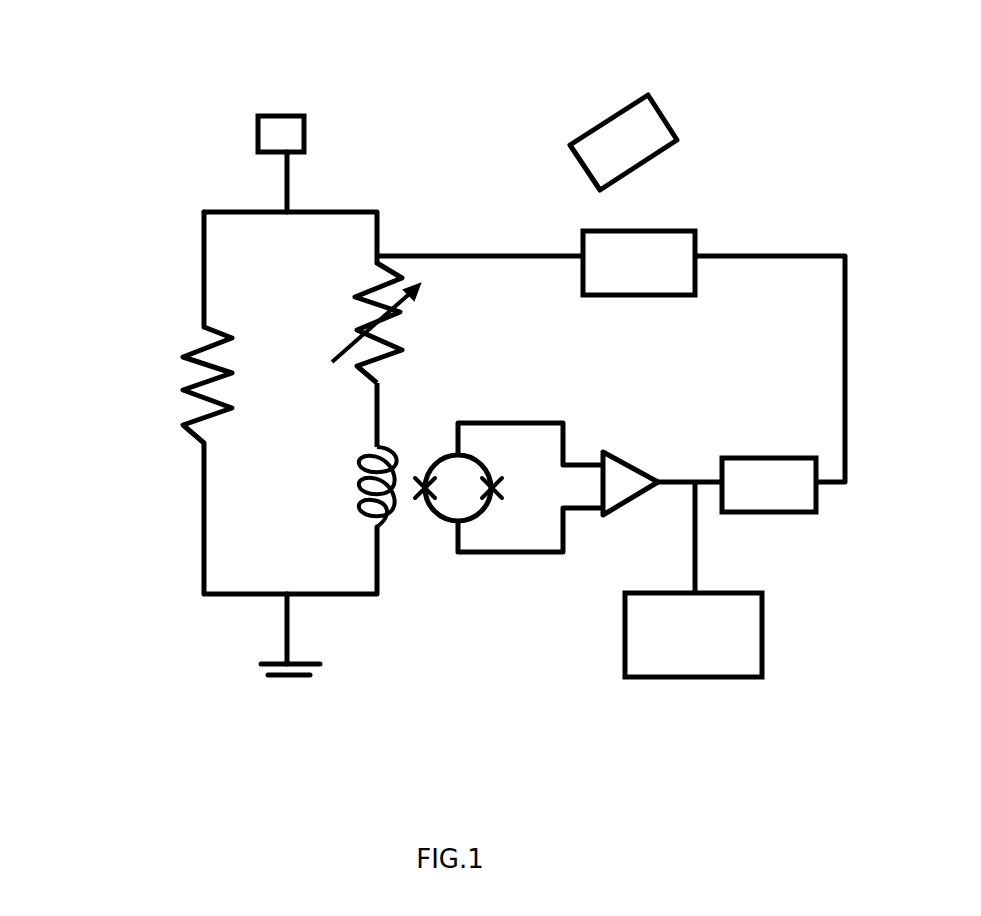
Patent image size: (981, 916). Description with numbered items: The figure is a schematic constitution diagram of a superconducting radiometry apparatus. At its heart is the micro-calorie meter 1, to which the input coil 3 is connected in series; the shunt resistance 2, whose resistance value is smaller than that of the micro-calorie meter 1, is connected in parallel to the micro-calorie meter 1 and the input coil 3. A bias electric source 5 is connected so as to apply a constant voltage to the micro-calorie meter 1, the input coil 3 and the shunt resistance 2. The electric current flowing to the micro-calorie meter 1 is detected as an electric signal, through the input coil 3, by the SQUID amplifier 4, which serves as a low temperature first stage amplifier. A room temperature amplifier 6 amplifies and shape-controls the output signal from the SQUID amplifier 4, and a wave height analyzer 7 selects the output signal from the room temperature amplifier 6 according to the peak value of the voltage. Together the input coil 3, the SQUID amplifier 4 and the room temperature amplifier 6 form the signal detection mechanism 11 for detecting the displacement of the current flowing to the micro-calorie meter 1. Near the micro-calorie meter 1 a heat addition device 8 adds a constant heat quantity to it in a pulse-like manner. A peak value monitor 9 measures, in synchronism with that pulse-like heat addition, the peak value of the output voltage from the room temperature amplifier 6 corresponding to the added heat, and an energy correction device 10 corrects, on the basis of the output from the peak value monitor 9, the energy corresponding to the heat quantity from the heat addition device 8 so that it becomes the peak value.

The micro-calorie meter 1 is at (390, 257).
The shunt resistance 2 is at (193, 385).
The input coil 3 is at (383, 517).
The SQUID amplifier 4 is at (468, 450).
The bias electric source 5 is at (293, 115).
The room temperature amplifier 6 is at (617, 465).
The wave height analyzer 7 is at (662, 653).
The heat addition device 8 is at (645, 123).
The peak value monitor 9 is at (762, 497).
The energy correction device 10 is at (652, 250).
The signal detection mechanism 11 is at (650, 515).